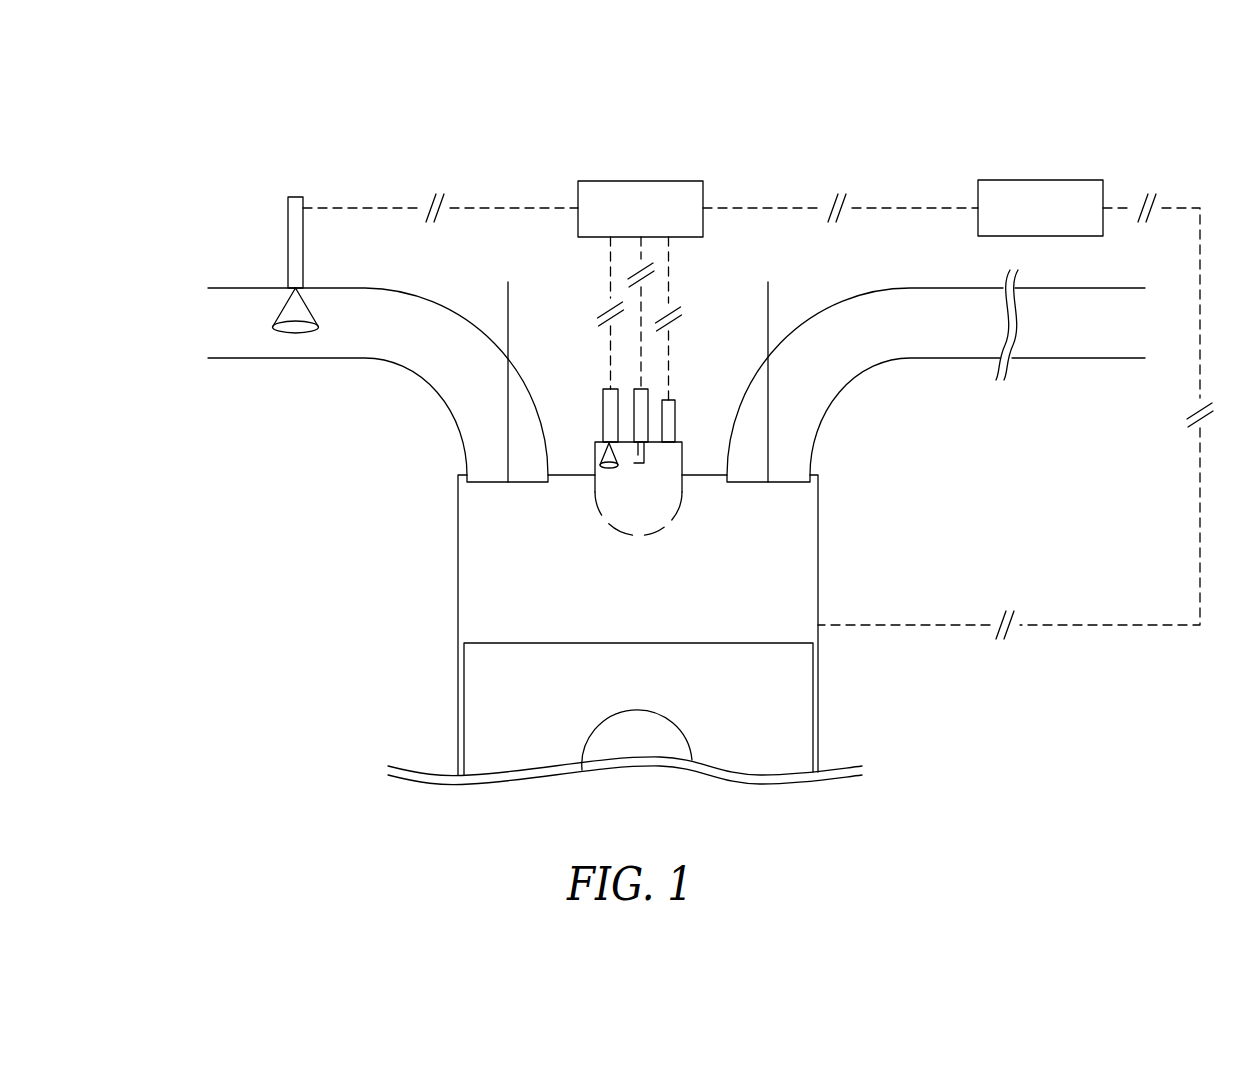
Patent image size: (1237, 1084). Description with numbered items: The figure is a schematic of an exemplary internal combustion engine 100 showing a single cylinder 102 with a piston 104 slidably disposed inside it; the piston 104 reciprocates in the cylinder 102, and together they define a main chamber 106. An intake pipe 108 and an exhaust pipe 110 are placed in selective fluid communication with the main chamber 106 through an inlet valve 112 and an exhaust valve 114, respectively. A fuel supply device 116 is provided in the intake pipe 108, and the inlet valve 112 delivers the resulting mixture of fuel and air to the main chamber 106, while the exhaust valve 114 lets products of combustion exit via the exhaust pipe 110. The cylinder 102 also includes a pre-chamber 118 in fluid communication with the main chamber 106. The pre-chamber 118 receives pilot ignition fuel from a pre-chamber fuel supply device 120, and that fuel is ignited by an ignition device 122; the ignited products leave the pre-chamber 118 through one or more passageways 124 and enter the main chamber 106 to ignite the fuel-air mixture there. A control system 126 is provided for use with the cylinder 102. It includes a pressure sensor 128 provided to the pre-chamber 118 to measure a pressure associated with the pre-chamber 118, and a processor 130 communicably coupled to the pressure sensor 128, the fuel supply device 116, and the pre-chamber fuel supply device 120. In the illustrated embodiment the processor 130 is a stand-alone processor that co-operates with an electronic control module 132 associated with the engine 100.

The internal combustion engine 100 is at (1143, 136).
The cylinder 102 is at (818, 560).
The piston 104 is at (805, 713).
The main chamber 106 is at (656, 628).
The intake pipe 108 is at (280, 358).
The exhaust pipe 110 is at (1103, 358).
The inlet valve 112 is at (508, 289).
The exhaust valve 114 is at (768, 294).
The fuel supply device 116 is at (288, 215).
The pre-chamber 118 is at (682, 463).
The pre-chamber fuel supply device 120 is at (603, 415).
The ignition device 122 is at (644, 388).
The passageways 124 is at (607, 527).
The control system 126 is at (725, 177).
The pressure sensor 128 is at (676, 405).
The processor 130 is at (640, 181).
The electronic control module 132 is at (1040, 180).